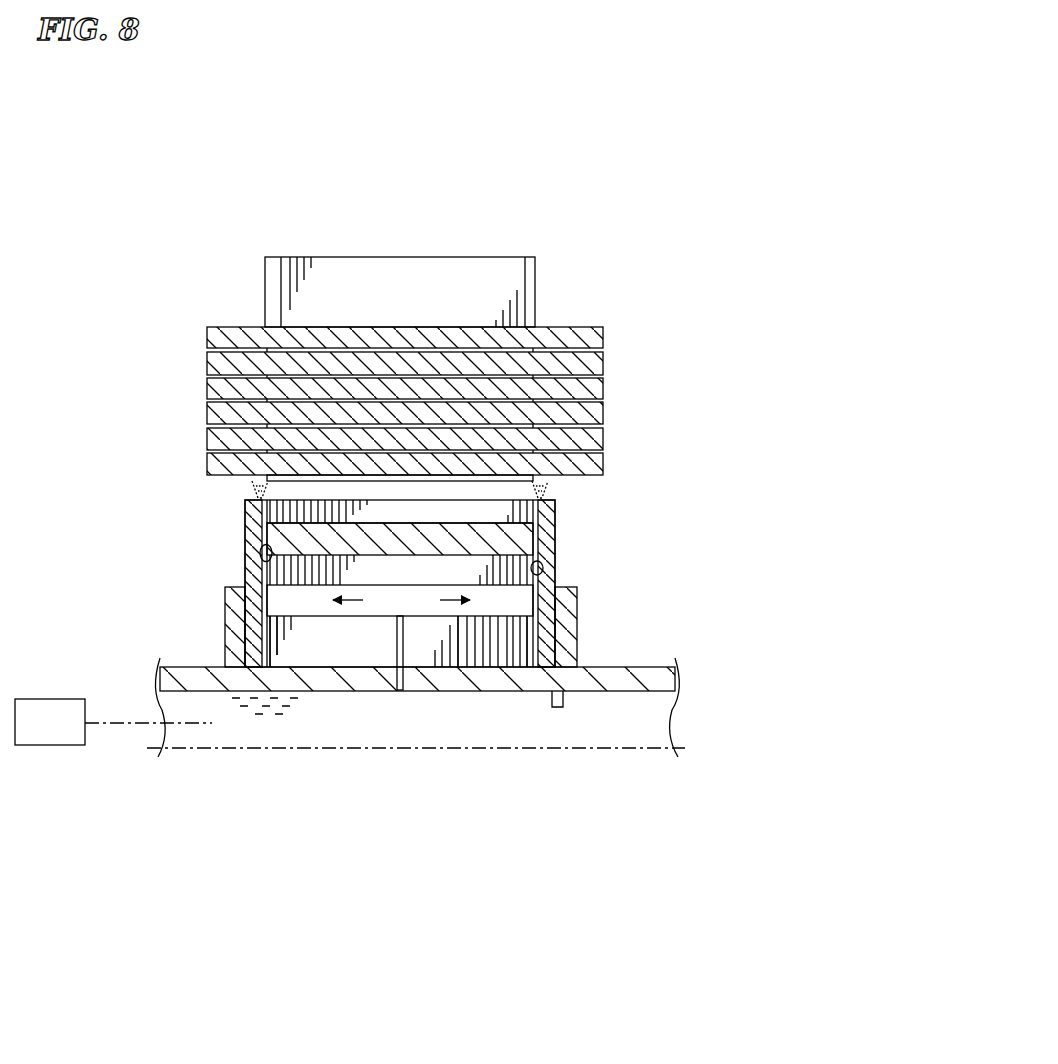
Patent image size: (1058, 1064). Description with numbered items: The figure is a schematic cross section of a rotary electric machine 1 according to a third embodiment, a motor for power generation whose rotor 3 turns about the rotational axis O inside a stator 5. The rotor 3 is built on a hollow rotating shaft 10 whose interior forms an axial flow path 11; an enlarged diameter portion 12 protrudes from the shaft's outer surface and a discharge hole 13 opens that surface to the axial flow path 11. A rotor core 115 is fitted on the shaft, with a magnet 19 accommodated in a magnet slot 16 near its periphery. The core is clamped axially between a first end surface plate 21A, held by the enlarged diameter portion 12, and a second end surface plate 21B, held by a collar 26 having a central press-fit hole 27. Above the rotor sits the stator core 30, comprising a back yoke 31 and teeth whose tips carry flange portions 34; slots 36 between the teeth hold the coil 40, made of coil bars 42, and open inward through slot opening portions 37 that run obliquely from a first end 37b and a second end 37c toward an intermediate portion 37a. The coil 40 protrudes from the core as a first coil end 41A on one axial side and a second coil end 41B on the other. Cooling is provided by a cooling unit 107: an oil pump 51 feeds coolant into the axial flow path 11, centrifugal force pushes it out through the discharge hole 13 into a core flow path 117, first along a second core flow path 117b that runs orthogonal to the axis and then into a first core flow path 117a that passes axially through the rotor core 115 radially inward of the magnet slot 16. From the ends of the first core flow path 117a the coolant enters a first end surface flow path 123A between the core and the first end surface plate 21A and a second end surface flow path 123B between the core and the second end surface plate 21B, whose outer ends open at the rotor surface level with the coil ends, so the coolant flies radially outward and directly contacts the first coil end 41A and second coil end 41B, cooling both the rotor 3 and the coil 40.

The rotary electric machine 1 is at (670, 145).
The rotor 3 is at (568, 558).
The stator 5 is at (615, 315).
The rotating shaft 10 is at (200, 667).
The axial flow path 11 is at (205, 690).
The enlarged diameter portion 12 is at (232, 605).
The discharge hole 13 is at (392, 693).
The magnet slot 16 is at (510, 535).
The magnet 19 is at (518, 543).
The first end surface plate 21A is at (245, 527).
The second end surface plate 21B is at (550, 605).
The collar 26 is at (565, 650).
The press-fit hole 27 is at (565, 660).
The stator core 30 is at (400, 253).
The back yoke 31 is at (330, 257).
The flange portion 34 is at (500, 470).
The slot 36 is at (505, 343).
The slot opening portion 37 is at (313, 478).
The intermediate portion 37a is at (407, 480).
The first end 37b is at (250, 481).
The second end 37c is at (548, 481).
The coil 40 is at (205, 362).
The first coil end 41A is at (207, 387).
The second coil end 41B is at (603, 415).
The coil bar 42 is at (207, 360).
The oil pump 51 is at (45, 699).
The cooling unit 107 is at (292, 722).
The rotor core 115 is at (340, 650).
The core flow path 117 is at (590, 866).
The first core flow path 117a is at (487, 618).
The second core flow path 117b is at (396, 642).
The first end surface flow path 123A is at (258, 553).
The second end surface flow path 123B is at (547, 571).
The rotational axis O is at (664, 750).